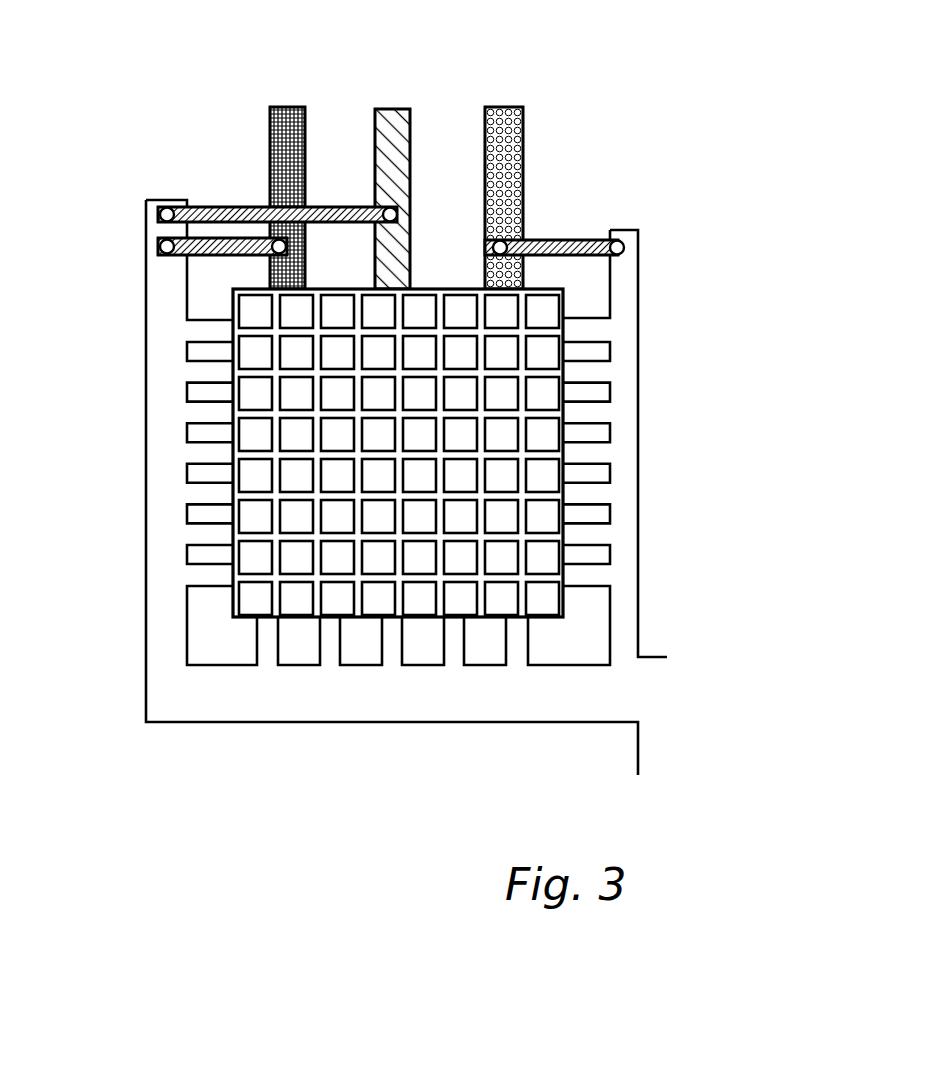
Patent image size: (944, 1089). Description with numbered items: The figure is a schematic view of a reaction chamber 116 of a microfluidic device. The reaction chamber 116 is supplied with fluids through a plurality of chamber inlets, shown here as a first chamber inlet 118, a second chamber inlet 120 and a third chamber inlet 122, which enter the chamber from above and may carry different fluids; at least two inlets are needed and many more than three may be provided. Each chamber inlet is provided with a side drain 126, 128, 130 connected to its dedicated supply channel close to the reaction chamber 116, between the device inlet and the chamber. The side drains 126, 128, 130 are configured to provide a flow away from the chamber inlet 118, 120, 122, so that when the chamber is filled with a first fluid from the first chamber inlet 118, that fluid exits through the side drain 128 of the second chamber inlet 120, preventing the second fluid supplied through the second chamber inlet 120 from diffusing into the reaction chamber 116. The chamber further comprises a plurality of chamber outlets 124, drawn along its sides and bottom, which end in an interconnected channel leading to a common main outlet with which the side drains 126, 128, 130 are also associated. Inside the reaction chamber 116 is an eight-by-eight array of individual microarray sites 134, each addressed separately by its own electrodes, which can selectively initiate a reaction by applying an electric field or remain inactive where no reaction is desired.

The reaction chamber 116 is at (563, 334).
The first chamber inlet 118 is at (293, 117).
The second chamber inlet 120 is at (395, 117).
The third chamber inlet 122 is at (508, 117).
The chamber outlets 124 is at (627, 573).
The side drain 126 is at (183, 255).
The side drain 128 is at (197, 207).
The side drain 130 is at (573, 240).
The microarray sites 134 is at (553, 473).